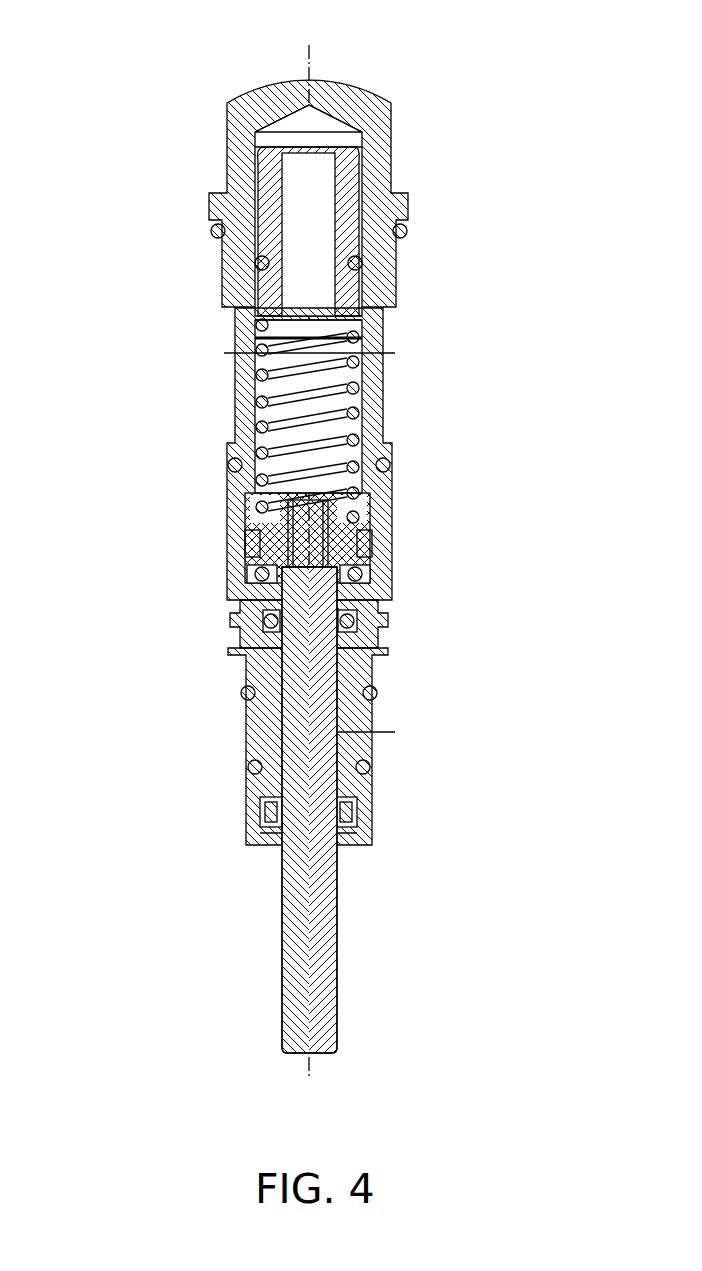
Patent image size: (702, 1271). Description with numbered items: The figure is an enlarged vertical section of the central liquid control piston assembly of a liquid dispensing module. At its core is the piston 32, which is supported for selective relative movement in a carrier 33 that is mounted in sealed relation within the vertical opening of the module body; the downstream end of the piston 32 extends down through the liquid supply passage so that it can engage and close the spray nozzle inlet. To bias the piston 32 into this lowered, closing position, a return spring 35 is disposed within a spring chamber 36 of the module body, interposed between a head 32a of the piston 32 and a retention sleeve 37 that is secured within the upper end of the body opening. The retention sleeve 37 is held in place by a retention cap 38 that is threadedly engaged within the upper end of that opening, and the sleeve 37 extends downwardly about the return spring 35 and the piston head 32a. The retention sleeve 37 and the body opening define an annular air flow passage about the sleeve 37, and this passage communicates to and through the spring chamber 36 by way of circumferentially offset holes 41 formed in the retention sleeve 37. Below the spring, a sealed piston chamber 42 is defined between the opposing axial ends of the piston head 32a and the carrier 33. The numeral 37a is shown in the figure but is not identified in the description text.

The retention cap 38 is at (247, 90).
The cavity of sleeve 37a is at (358, 150).
The circumferentially offset holes 41 is at (230, 353).
The retention sleeve 37 is at (232, 390).
The return spring 35 is at (383, 398).
The spring chamber 36 is at (232, 410).
The head of the piston 32a is at (366, 508).
The sealed piston chamber 42 is at (228, 598).
The carrier 33 is at (243, 712).
The piston 32 is at (337, 980).